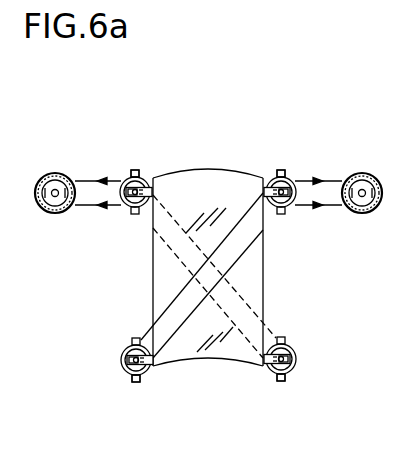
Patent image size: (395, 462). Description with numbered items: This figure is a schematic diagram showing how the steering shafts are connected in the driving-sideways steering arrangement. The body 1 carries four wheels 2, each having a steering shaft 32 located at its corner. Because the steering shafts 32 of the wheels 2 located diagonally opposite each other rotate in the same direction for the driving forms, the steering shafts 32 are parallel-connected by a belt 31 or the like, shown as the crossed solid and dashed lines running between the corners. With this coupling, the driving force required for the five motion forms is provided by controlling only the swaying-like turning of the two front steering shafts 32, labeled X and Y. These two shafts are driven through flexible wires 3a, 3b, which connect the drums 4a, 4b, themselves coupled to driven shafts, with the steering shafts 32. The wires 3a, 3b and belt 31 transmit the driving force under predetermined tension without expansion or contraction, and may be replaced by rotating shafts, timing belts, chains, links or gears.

The vehicle body 1 is at (248, 275).
The wheel 2 is at (137, 169).
The flexible wire 3a is at (112, 178).
The flexible wire 3b is at (302, 180).
The drum 4a is at (58, 209).
The drum 4b is at (358, 213).
The belt 31 is at (172, 251).
The steering shaft 32 is at (142, 182).